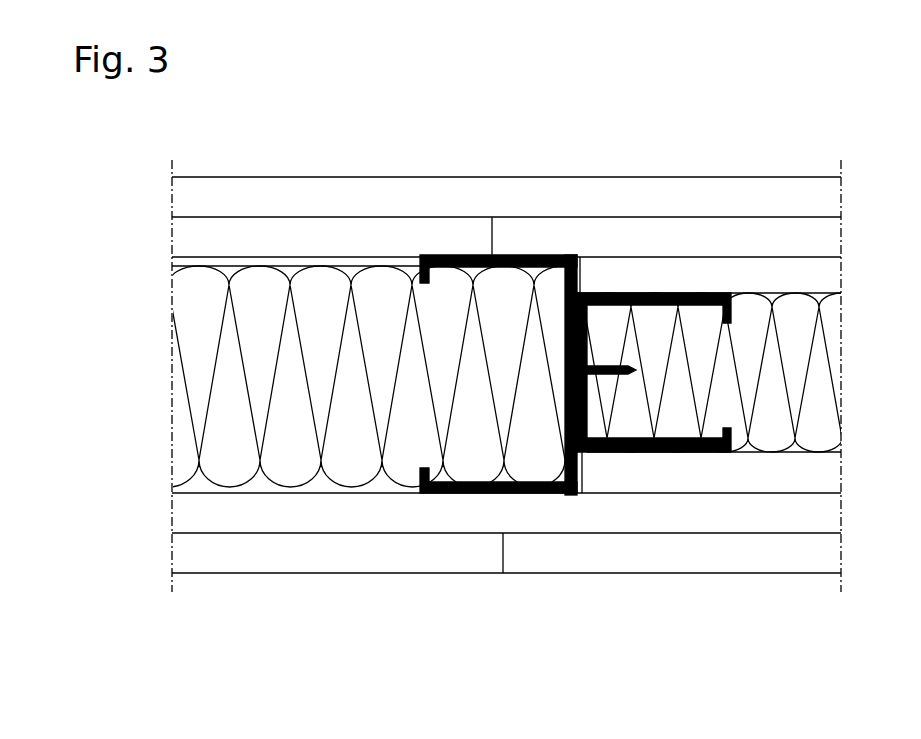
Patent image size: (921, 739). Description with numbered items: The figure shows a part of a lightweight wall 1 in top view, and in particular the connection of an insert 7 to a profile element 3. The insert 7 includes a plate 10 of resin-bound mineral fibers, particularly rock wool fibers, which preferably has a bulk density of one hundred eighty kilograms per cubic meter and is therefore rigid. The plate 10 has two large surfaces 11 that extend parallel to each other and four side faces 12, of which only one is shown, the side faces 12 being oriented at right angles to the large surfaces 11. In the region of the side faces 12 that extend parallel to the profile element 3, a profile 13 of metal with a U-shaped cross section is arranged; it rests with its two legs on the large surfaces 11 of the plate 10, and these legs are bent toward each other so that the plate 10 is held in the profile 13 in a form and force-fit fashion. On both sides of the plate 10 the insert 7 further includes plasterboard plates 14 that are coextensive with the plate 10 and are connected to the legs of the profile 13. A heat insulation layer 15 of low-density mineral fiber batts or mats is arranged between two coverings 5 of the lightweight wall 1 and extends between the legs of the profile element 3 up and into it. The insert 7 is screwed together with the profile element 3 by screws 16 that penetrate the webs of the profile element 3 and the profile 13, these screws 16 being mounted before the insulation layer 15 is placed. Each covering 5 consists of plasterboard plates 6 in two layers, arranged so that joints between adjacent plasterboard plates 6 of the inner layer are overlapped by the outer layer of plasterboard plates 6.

The lightweight wall 1 is at (860, 148).
The profile element 3 is at (498, 451).
The covering 5 is at (585, 172).
The plasterboard plate 6 is at (280, 247).
The insert 7 is at (852, 243).
The plate 10 is at (822, 367).
The large surface 11 is at (756, 292).
The side face 12 is at (568, 333).
The profile 13 is at (603, 453).
The plasterboard plate 14 is at (805, 275).
The heat insulation layer 15 is at (187, 370).
The screw 16 is at (568, 370).